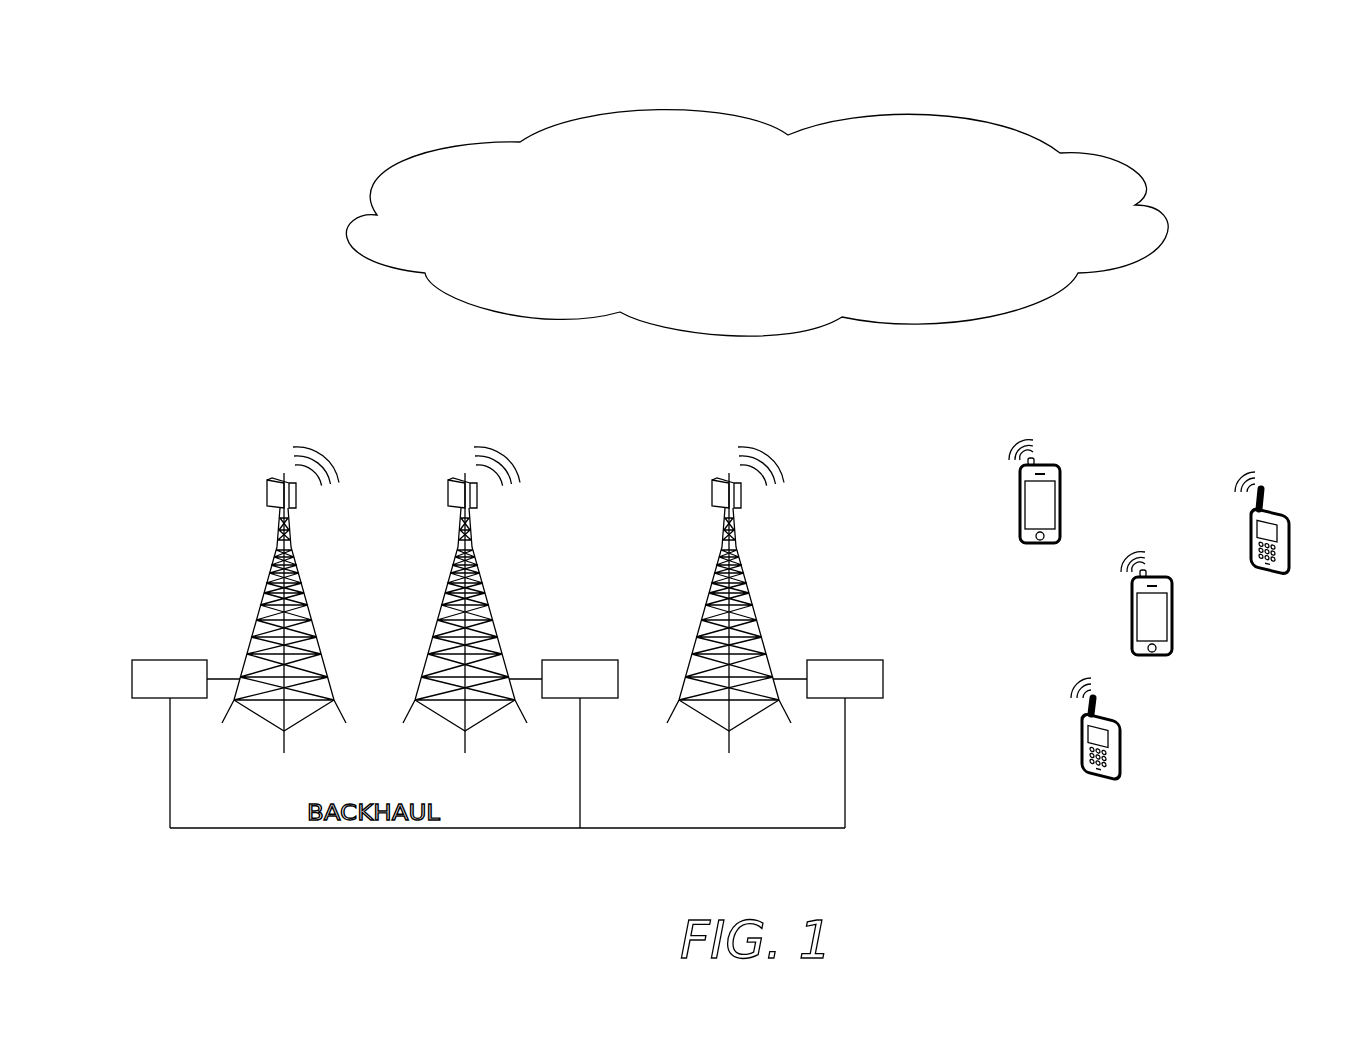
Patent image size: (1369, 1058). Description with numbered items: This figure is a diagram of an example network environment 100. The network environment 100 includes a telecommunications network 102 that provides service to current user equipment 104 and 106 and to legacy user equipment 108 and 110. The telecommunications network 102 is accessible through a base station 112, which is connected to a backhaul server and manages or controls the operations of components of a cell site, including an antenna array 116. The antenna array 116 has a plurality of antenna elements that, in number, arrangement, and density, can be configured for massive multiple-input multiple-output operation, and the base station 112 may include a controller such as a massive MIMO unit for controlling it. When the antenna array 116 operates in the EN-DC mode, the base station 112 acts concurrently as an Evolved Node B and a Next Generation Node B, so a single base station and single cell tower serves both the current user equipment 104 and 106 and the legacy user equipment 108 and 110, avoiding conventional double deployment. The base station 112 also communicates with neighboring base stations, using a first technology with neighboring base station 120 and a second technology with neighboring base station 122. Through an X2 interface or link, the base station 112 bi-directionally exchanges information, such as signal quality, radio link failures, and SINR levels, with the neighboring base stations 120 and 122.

The network environment 100 is at (146, 118).
The telecommunications network 102 is at (780, 235).
The current user equipment 104 is at (1060, 506).
The current user equipment 106 is at (1173, 615).
The legacy user equipment 108 is at (1122, 746).
The legacy user equipment 110 is at (1293, 540).
The base station 112 is at (845, 660).
The antenna array 116 is at (745, 496).
The neighboring base station 120 is at (579, 660).
The neighboring base station 122 is at (168, 660).